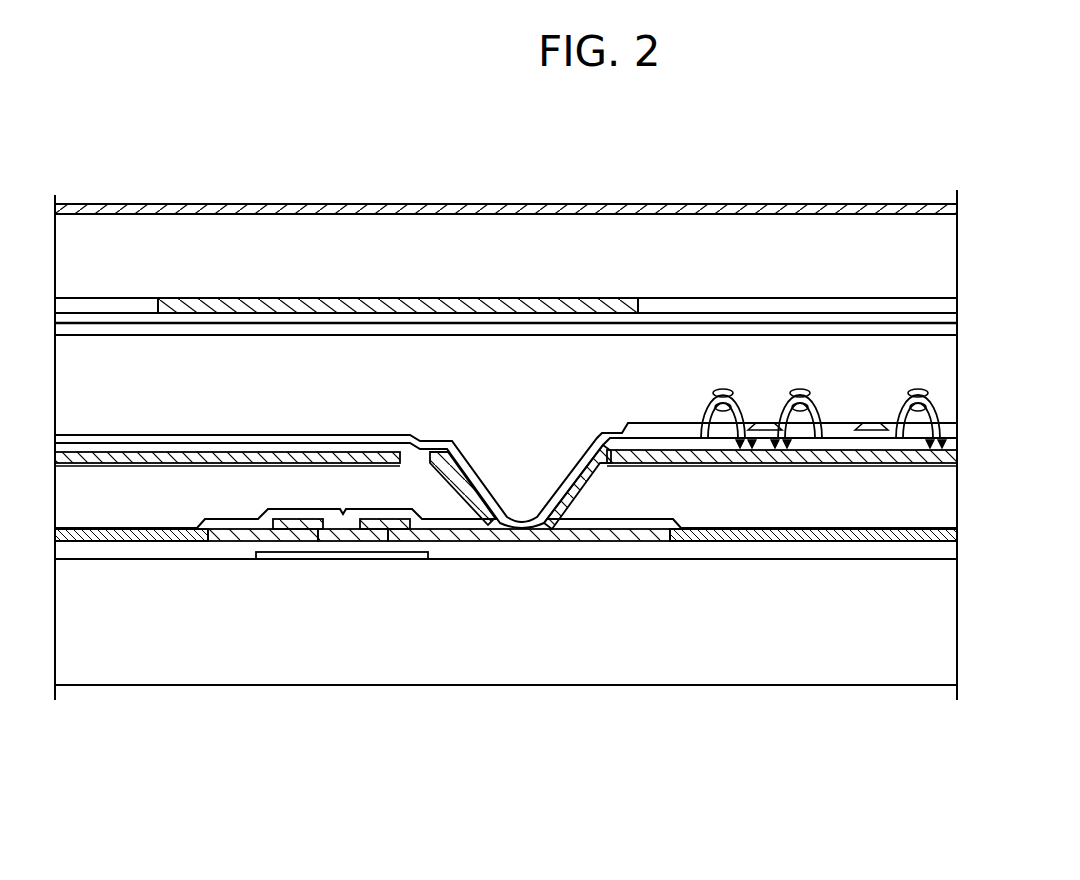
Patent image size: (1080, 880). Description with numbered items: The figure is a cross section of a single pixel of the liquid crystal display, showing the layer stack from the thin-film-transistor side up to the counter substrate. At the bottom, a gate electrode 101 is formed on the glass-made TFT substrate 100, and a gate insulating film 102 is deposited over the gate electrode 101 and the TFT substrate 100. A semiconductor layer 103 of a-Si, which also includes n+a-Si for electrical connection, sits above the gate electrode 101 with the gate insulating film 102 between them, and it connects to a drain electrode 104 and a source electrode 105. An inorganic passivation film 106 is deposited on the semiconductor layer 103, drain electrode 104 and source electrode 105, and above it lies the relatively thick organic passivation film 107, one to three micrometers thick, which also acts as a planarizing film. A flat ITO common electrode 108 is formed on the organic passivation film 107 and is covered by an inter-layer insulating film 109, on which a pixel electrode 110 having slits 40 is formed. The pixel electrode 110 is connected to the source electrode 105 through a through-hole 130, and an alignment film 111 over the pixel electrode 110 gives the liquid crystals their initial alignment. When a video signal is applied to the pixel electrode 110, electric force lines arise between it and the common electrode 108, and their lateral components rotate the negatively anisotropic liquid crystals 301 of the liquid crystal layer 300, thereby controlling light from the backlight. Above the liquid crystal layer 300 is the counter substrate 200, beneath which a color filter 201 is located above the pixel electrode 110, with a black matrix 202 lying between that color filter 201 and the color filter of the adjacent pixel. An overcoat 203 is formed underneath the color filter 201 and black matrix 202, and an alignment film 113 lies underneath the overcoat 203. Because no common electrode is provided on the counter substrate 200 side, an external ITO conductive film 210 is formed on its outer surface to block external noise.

The slits 40 is at (760, 432).
The TFT substrate 100 is at (945, 623).
The gate electrode 101 is at (354, 557).
The gate insulating film 102 is at (945, 550).
The semiconductor layer 103 is at (299, 545).
The drain electrode 104 is at (228, 545).
The source electrode 105 is at (456, 545).
The inorganic passivation film 106 is at (945, 535).
The organic passivation film 107 is at (945, 502).
The common electrode 108 is at (945, 463).
The inter-layer insulating film 109 is at (945, 451).
The pixel electrode 110 is at (853, 440).
The alignment film 111 is at (945, 439).
The alignment film 113 is at (945, 330).
The through-hole 130 is at (523, 445).
The counter substrate 200 is at (945, 248).
The color filter 201 is at (672, 305).
The black matrix 202 is at (508, 300).
The overcoat 203 is at (945, 319).
The external ITO conductive film 210 is at (770, 208).
The liquid crystal layer 300 is at (945, 358).
The liquid crystals 301 is at (928, 393).